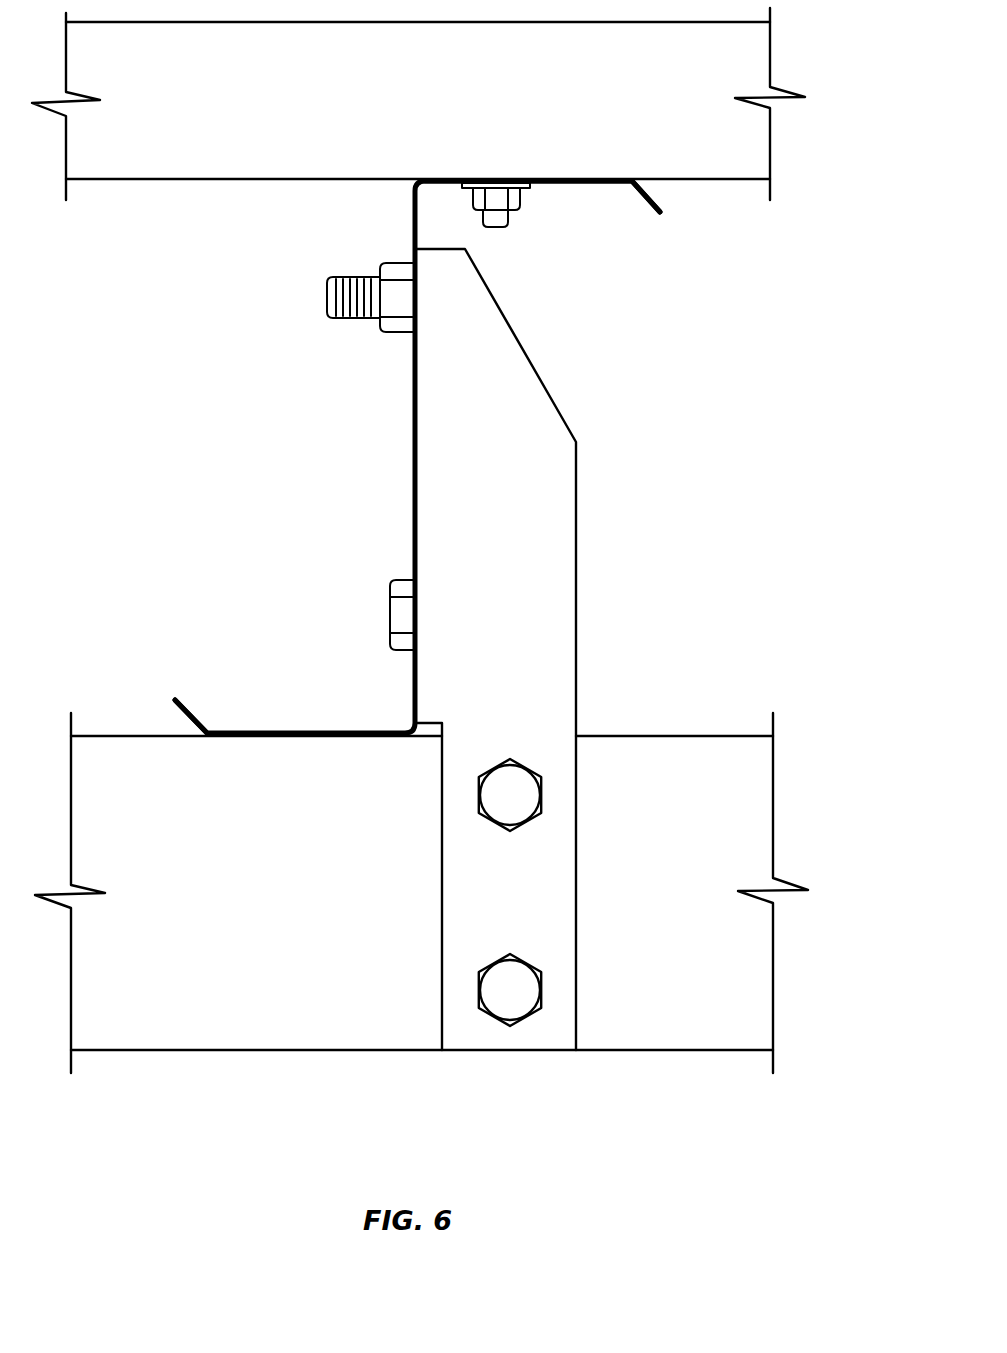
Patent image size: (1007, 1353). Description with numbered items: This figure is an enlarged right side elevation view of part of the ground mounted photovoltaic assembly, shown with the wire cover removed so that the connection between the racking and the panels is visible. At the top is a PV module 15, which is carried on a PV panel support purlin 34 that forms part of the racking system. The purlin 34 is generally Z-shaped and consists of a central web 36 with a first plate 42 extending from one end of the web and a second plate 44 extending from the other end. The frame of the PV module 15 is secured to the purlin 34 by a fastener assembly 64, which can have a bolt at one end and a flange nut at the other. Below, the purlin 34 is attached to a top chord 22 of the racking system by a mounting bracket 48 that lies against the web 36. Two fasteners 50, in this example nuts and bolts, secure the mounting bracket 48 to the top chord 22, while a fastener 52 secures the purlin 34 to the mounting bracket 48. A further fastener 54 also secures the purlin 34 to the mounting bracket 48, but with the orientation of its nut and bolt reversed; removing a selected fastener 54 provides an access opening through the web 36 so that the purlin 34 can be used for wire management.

The PV module 15 is at (732, 62).
The top chord 22 is at (732, 937).
The PV panel support purlin 34 is at (661, 214).
The central web 36 is at (413, 517).
The first plate 42 is at (568, 183).
The second plate 44 is at (258, 733).
The mounting bracket 48 is at (558, 615).
The fastener 50 is at (546, 796).
The fastener 52 is at (375, 320).
The fastener 54 is at (400, 617).
The fastener assembly 64 is at (508, 168).